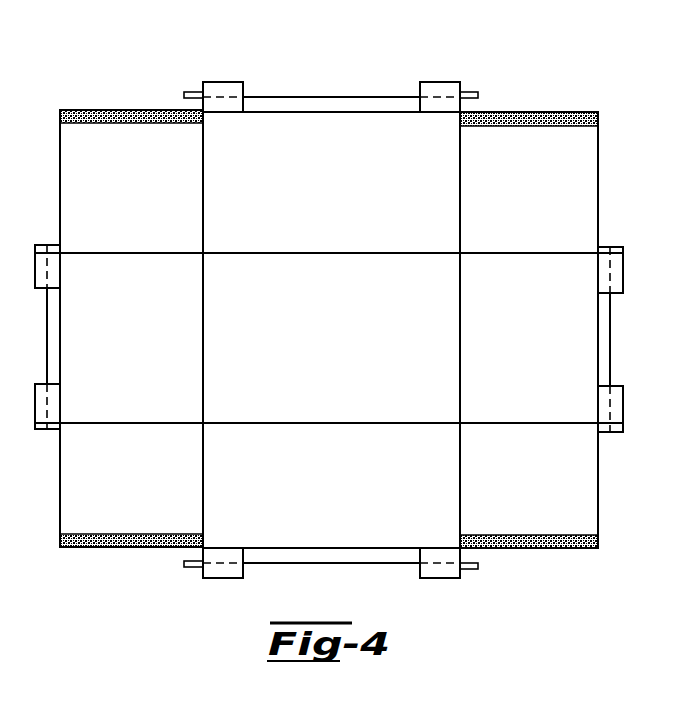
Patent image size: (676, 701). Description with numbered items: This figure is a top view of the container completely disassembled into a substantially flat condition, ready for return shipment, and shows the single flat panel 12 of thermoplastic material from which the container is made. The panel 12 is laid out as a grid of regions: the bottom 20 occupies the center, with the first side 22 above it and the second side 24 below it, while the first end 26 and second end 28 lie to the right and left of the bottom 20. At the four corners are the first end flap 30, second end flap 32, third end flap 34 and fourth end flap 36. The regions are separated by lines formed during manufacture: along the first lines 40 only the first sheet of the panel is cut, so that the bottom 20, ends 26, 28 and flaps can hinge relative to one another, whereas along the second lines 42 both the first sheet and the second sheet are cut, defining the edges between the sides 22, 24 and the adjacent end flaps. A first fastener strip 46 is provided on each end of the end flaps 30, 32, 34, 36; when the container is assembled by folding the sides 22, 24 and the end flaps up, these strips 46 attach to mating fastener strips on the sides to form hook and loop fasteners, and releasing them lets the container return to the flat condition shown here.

The panel 12 is at (334, 88).
The bottom 20 is at (346, 356).
The first side 22 is at (345, 198).
The second side 24 is at (346, 501).
The first end 26 is at (542, 381).
The second end 28 is at (147, 380).
The first end flap 30 is at (542, 204).
The second end flap 32 is at (516, 490).
The third end flap 34 is at (147, 200).
The fourth end flap 36 is at (177, 486).
The first lines 40 is at (132, 255).
The second lines 42 is at (203, 150).
The first fastener strip 46 is at (131, 110).